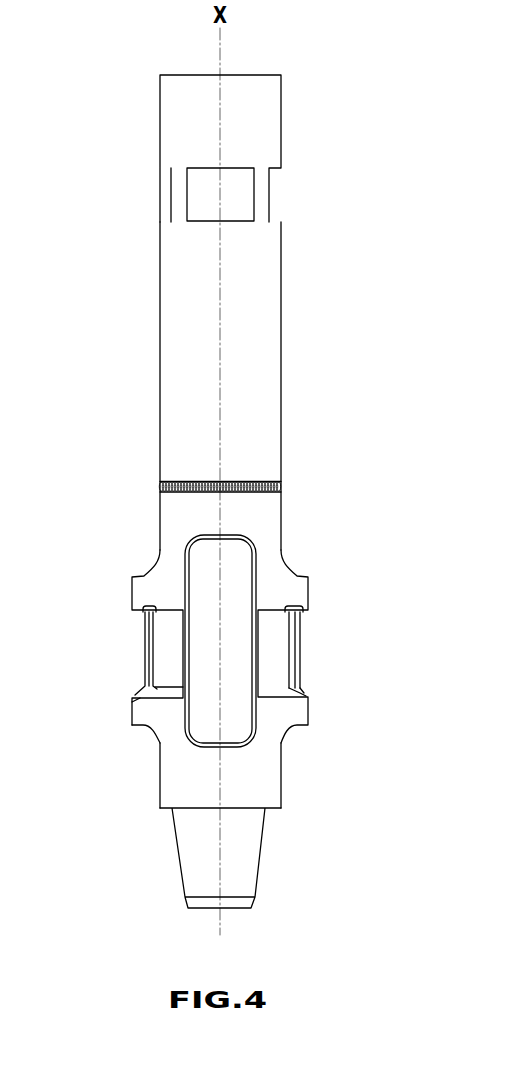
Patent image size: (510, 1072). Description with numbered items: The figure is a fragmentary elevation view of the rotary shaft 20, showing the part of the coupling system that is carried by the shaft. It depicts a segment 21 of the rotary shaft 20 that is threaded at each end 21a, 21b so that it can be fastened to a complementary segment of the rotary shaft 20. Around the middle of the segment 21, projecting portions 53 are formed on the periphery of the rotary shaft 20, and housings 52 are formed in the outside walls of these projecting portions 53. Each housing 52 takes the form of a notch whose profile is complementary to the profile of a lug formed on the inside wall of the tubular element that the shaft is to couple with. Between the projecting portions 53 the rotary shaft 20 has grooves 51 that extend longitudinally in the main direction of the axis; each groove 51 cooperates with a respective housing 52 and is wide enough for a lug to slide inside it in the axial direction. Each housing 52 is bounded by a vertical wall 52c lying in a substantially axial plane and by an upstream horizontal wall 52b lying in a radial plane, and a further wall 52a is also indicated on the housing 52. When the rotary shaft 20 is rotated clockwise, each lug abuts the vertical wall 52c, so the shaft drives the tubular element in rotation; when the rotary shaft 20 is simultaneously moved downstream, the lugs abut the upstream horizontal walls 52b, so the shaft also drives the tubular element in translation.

The rotary shaft 20 is at (281, 321).
The segment 21 is at (138, 373).
The end 21a is at (253, 75).
The end 21b is at (263, 861).
The groove 51 is at (203, 577).
The housing 52 is at (274, 640).
The lower end of clip 52a is at (297, 693).
The upstream horizontal wall 52b is at (301, 607).
The vertical wall 52c is at (290, 667).
The projecting portion 53 is at (287, 591).